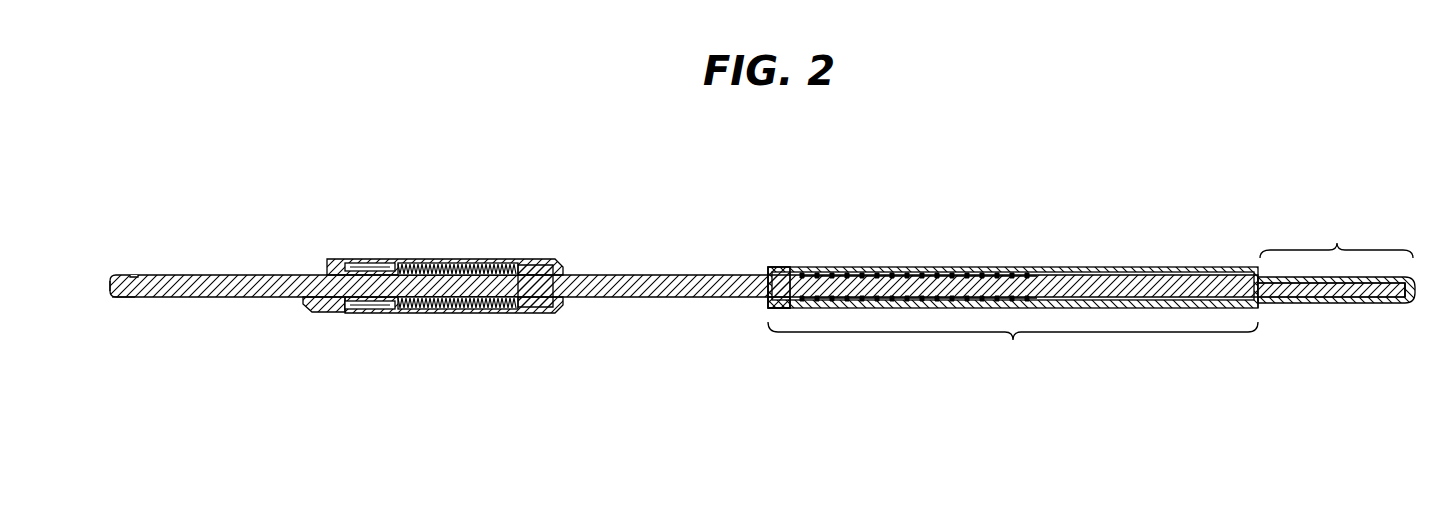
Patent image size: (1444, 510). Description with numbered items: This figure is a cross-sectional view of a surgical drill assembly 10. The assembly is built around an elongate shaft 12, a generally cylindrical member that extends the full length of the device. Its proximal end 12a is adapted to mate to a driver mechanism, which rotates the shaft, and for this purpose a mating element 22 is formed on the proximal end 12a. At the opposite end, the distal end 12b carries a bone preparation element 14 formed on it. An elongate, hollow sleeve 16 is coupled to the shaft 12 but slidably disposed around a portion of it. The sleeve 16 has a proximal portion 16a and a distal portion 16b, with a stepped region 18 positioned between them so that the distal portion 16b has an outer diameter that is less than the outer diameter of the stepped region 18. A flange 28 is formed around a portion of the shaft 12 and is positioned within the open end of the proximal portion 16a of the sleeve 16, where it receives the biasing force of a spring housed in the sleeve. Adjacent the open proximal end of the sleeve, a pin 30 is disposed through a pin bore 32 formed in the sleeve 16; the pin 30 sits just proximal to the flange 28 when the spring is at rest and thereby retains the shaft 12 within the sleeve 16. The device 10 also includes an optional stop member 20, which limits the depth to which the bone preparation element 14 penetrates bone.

The surgical drill assembly 10 is at (1148, 96).
The elongate shaft 12 is at (652, 276).
The proximal end 12a is at (143, 241).
The distal end 12b is at (1392, 309).
The bone preparation element 14 is at (1328, 302).
The hollow sleeve 16 is at (447, 318).
The proximal portion 16a is at (1013, 345).
The distal portion 16b is at (1336, 262).
The stepped region 18 is at (1262, 308).
The stop member 20 is at (442, 258).
The mating element 22 is at (133, 300).
The flange 28 is at (760, 300).
The pin 30 is at (780, 268).
The pin bore 32 is at (779, 287).